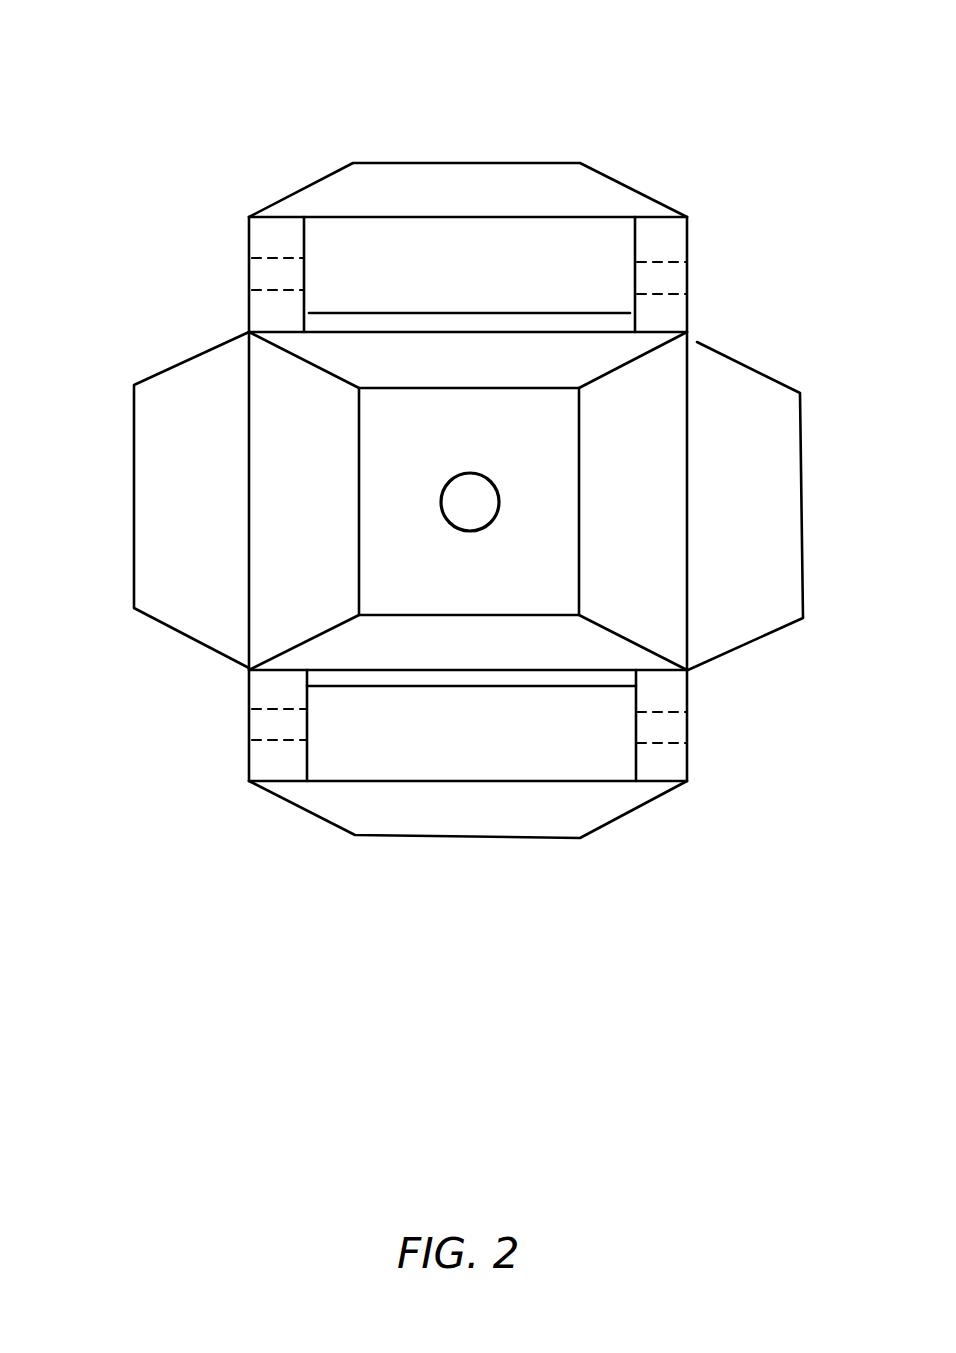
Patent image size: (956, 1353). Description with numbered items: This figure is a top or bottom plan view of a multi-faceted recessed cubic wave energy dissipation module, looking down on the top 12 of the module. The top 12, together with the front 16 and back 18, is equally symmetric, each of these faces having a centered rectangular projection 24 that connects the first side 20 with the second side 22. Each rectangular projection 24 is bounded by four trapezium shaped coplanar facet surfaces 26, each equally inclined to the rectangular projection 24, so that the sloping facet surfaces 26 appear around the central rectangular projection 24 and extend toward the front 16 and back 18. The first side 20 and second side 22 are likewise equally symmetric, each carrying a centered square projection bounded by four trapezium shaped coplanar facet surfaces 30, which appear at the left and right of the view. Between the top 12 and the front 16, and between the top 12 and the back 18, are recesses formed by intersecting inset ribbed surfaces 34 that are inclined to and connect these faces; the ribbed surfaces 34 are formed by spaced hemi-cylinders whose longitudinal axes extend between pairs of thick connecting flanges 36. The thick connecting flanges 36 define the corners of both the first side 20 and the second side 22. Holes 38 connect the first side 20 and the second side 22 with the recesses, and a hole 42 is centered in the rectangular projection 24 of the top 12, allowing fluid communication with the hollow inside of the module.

The top 12 is at (246, 110).
The front 16 is at (459, 868).
The back 18 is at (452, 138).
The first side 20 is at (116, 507).
The second side 22 is at (814, 486).
The rectangular projection 24 is at (479, 441).
The trapezium shaped coplanar facet surface 26 is at (423, 209).
The trapezium shaped coplanar facet surface 30 is at (206, 496).
The inset ribbed surface 34 is at (417, 289).
The thick connecting flange 36 is at (272, 237).
The hole 38 is at (270, 272).
The hole 42 is at (473, 495).